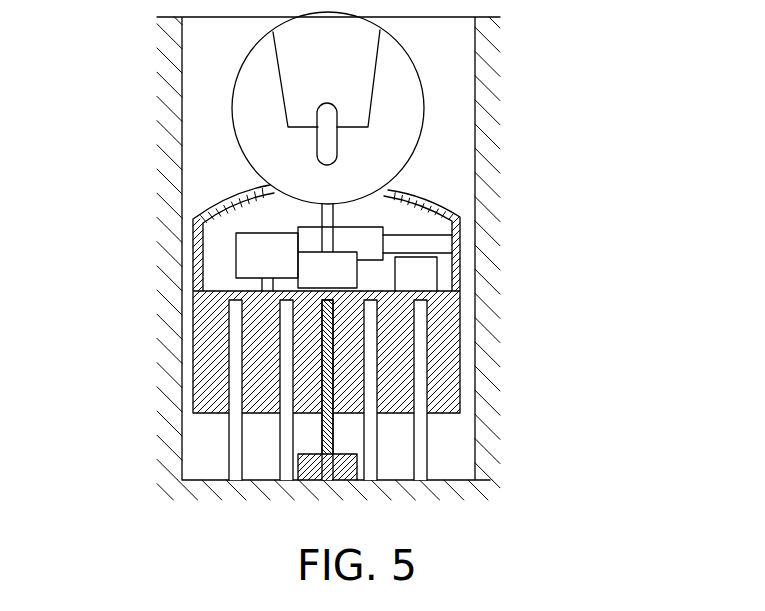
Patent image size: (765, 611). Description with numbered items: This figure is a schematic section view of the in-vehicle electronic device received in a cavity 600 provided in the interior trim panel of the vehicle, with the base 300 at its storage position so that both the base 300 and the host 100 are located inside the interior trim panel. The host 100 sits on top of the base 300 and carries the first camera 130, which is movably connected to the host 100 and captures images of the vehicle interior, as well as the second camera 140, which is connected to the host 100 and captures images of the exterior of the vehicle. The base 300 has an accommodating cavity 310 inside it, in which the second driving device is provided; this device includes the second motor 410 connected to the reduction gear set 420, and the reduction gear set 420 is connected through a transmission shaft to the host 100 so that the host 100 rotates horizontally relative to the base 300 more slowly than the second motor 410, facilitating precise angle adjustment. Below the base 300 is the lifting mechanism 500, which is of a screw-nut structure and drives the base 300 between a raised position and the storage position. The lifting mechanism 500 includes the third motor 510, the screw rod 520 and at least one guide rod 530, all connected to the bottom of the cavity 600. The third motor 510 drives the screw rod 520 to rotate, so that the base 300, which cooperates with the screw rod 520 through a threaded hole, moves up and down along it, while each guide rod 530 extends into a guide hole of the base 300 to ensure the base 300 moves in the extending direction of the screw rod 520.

The host 100 is at (228, 116).
The first camera 130 is at (308, 61).
The second camera 140 is at (330, 117).
The base 300 is at (437, 202).
The accommodating cavity 310 is at (252, 221).
The second motor 410 is at (417, 275).
The reduction gear set 420 is at (313, 266).
The lifting mechanism 500 is at (452, 390).
The third motor 510 is at (330, 470).
The screw rod 520 is at (332, 380).
The guide rod 530 is at (417, 435).
The cavity 600 is at (448, 165).